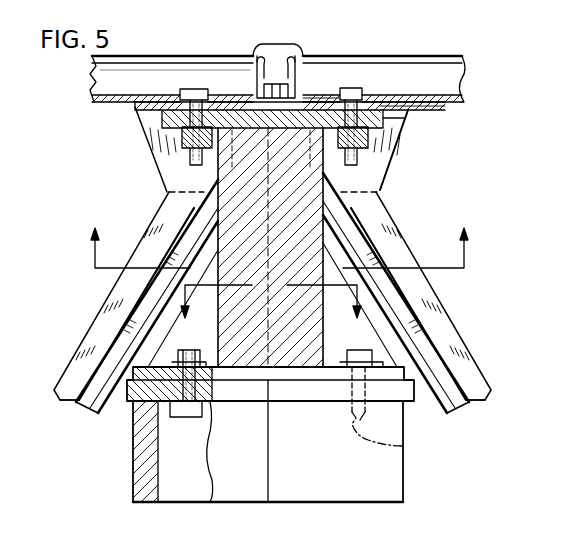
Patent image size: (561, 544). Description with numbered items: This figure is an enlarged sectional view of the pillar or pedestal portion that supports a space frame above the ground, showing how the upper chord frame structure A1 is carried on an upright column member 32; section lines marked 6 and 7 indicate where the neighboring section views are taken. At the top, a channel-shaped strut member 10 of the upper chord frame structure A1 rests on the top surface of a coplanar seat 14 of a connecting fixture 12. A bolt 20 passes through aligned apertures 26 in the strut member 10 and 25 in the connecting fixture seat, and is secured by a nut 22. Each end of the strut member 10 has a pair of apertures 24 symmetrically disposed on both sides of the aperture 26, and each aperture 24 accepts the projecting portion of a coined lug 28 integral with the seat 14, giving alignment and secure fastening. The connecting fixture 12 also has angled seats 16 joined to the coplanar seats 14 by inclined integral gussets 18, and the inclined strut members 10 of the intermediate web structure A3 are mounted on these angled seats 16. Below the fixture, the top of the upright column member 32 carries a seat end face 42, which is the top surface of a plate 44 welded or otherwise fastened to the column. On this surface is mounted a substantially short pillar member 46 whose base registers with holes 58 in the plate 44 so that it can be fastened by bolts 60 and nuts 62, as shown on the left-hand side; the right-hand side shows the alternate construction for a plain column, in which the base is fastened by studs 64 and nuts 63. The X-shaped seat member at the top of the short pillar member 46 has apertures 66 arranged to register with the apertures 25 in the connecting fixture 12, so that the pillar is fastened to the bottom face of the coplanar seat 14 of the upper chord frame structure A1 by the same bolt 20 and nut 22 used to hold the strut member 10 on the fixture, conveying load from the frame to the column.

The upper chord frame structure A1 is at (456, 90).
The intermediate web structure A3 is at (468, 344).
The strut member 10 is at (258, 46).
The connecting fixture 12 is at (385, 185).
The coplanar seat 14 is at (162, 112).
The angled seat 16 is at (184, 204).
The inclined integral gusset 18 is at (396, 146).
The bolt 20 is at (186, 100).
The nut 22 is at (258, 191).
The aperture 24 is at (160, 96).
The aperture 25 is at (395, 118).
The aperture 26 is at (398, 96).
The coined lug 28 is at (320, 100).
The upright column member 32 is at (406, 478).
The seat end face 42 is at (254, 374).
The plate 44 is at (134, 404).
The short pillar member 46 is at (234, 276).
The hole 58 is at (206, 424).
The bolt 60 is at (176, 418).
The nut 62 is at (178, 356).
The nut 63 is at (374, 354).
The stud 64 is at (392, 434).
The aperture 66 is at (182, 128).
The section line 6 is at (276, 234).
The section line 7 is at (269, 311).